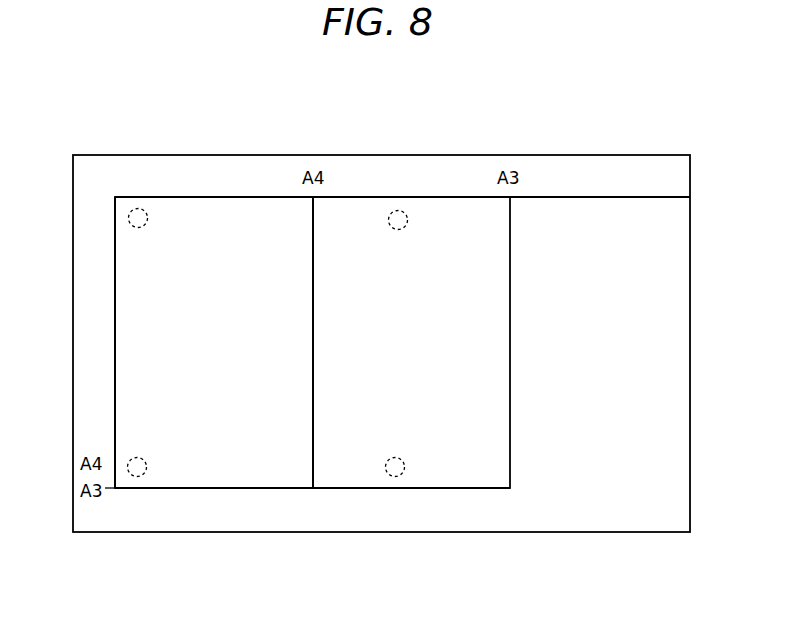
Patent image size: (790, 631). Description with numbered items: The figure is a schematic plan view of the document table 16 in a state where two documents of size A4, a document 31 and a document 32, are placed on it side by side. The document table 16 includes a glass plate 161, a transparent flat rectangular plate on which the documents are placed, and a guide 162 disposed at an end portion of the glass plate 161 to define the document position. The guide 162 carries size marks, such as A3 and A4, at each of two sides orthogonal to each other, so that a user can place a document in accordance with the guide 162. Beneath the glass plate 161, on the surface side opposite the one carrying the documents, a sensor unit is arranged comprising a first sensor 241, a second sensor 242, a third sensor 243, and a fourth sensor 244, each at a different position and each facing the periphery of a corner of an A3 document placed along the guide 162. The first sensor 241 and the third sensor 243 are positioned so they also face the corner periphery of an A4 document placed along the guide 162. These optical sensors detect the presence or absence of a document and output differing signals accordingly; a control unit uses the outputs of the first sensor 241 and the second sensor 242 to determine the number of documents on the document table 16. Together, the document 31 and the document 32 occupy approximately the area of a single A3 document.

The document table 16 is at (648, 118).
The glass plate 161 is at (643, 508).
The guide 162 is at (207, 177).
The document 31 is at (230, 227).
The document 32 is at (437, 227).
The first sensor 241 is at (135, 208).
The second sensor 242 is at (398, 210).
The third sensor 243 is at (138, 477).
The fourth sensor 244 is at (396, 477).